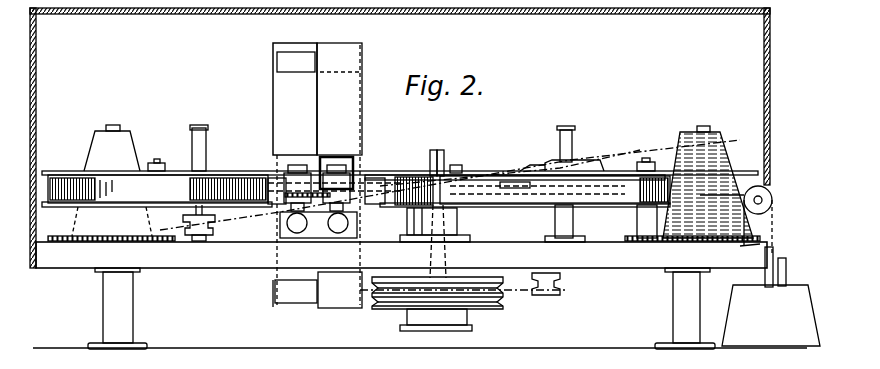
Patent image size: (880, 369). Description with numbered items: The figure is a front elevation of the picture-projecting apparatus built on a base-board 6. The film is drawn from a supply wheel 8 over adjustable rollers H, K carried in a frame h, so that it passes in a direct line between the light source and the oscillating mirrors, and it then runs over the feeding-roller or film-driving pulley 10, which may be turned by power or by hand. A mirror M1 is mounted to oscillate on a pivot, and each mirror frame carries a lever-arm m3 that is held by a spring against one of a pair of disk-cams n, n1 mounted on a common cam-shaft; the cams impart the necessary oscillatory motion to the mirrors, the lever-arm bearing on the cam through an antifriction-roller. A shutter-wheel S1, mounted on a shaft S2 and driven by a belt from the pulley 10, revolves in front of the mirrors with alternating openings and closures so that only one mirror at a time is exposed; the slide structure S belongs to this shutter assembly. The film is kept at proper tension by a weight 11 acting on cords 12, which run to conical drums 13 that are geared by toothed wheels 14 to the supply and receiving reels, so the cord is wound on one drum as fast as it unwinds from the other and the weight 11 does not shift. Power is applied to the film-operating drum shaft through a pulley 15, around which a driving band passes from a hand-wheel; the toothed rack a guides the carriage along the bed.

The base-board 6 is at (420, 295).
The supply wheel 8 is at (58, 172).
The film-driving pulley 10 is at (470, 172).
The weight 11 is at (771, 315).
The cord 12 is at (248, 222).
The conical drum 13 is at (736, 150).
The toothed wheel 14 is at (118, 236).
The pulley 15 is at (462, 304).
The toothed rack a is at (500, 214).
The roller frame h is at (320, 214).
The disk-cam n is at (602, 170).
The disk-cam n1 is at (601, 223).
The lever-arm m3 is at (509, 178).
The mirror M1 is at (366, 160).
The slide frame S is at (306, 180).
The shutter-wheel S1 is at (293, 52).
The shutter shaft S2 is at (336, 150).
The adjustable roller H is at (297, 165).
The adjustable roller K is at (336, 165).